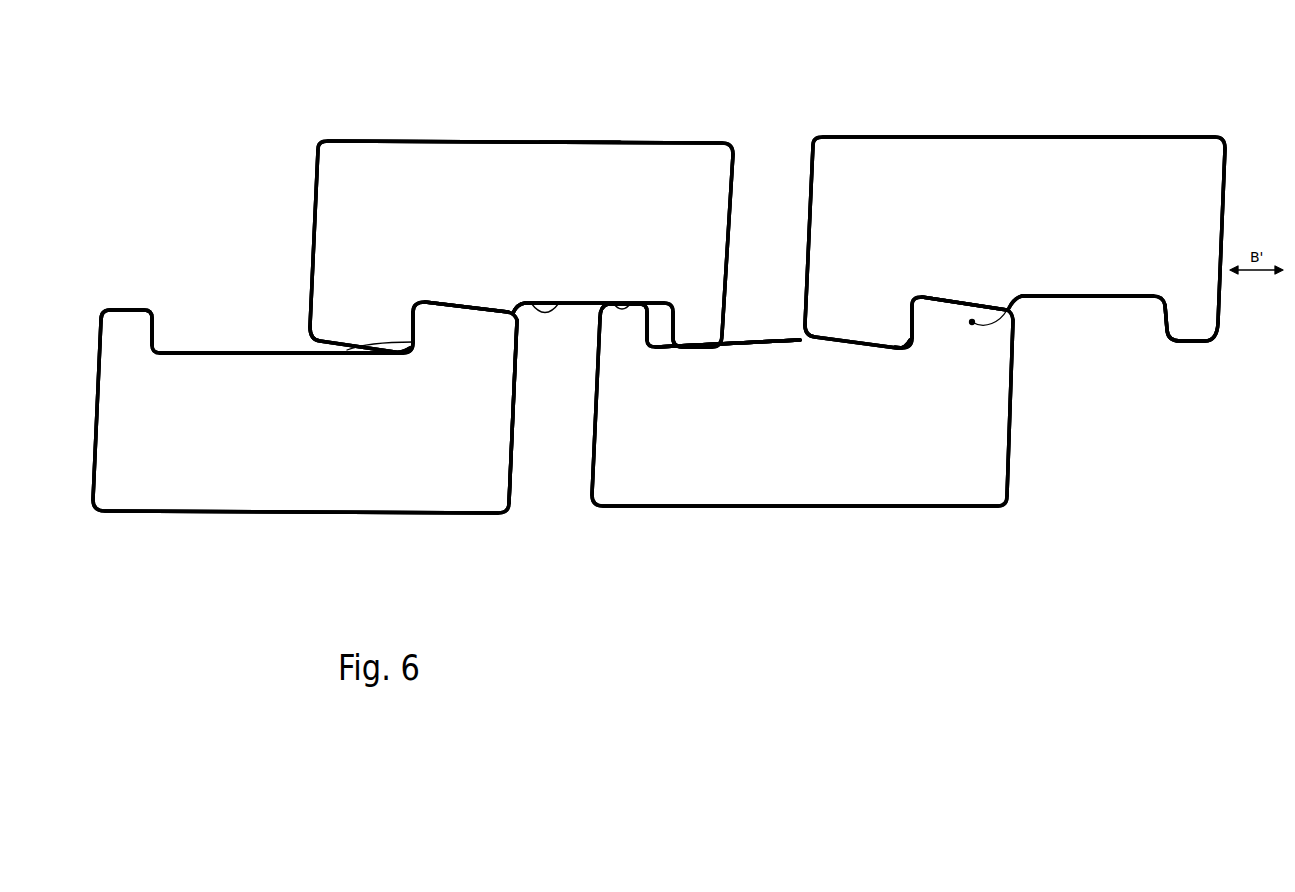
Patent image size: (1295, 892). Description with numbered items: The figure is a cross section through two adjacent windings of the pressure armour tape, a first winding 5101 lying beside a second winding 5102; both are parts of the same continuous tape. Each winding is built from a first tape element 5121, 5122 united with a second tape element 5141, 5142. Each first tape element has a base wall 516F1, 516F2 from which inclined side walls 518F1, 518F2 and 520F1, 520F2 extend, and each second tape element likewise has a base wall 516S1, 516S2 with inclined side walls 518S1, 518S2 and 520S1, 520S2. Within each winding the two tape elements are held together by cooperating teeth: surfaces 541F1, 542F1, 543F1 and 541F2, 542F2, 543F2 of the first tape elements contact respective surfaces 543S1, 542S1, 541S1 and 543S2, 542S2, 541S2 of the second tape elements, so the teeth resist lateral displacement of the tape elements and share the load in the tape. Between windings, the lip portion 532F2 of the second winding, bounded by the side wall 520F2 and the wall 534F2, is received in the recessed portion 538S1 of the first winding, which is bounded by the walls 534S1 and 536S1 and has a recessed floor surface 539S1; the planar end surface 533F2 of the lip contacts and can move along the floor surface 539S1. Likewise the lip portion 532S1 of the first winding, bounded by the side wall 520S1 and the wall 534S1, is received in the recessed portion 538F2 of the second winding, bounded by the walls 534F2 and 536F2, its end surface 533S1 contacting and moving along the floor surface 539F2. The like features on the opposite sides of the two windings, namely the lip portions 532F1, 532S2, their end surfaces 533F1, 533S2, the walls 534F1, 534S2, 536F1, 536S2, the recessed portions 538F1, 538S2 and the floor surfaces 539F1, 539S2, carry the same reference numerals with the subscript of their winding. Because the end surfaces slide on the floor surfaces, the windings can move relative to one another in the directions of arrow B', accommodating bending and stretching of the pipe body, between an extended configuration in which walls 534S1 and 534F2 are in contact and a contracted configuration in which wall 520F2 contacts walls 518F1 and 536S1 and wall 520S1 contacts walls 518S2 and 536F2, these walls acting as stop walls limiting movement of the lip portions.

The first winding 5101 is at (1098, 160).
The second winding 5102 is at (575, 150).
The first tape element 5121 is at (1017, 150).
The first tape element 5122 is at (480, 140).
The second tape element 5141 is at (855, 495).
The second tape element 5142 is at (347, 493).
The base wall 516F1 is at (918, 140).
The base wall 516F2 is at (401, 150).
The side wall 518F1 is at (812, 163).
The side wall 518F2 is at (313, 165).
The side wall 520F1 is at (1227, 212).
The side wall 520F2 is at (733, 208).
The base wall 516S1 is at (733, 507).
The base wall 516S2 is at (175, 513).
The side wall 518S1 is at (1004, 490).
The side wall 518S2 is at (510, 395).
The side wall 520S1 is at (593, 457).
The side wall 520S2 is at (93, 455).
The lip portion 532F1 is at (1198, 323).
The lip portion 532F2 is at (685, 327).
The end surface 533F1 is at (1188, 336).
The end surface 533F2 is at (707, 343).
The wall 534F1 is at (1160, 300).
The wall 534F2 is at (685, 350).
The wall 536F1 is at (1013, 303).
The wall 536F2 is at (515, 317).
The recessed portion 538F1 is at (1120, 300).
The recessed portion 538F2 is at (563, 328).
The recessed floor surface 539F1 is at (1073, 300).
The recessed floor surface 539F2 is at (531, 303).
The lip portion 532S1 is at (625, 328).
The lip portion 532S2 is at (127, 330).
The end surface 533S1 is at (617, 302).
The end surface 533S2 is at (132, 303).
The wall 534S1 is at (645, 328).
The wall 534S2 is at (157, 313).
The wall 536S1 is at (793, 347).
The wall 536S2 is at (300, 350).
The recessed portion 538S1 is at (783, 323).
The recessed portion 538S2 is at (187, 353).
The recessed floor surface 539S1 is at (737, 345).
The recessed floor surface 539S2 is at (212, 353).
The surface 541F1 is at (971, 294).
The surface 541F2 is at (512, 320).
The surface 541S1 is at (850, 356).
The surface 541S2 is at (341, 354).
The surface 542F1 is at (900, 310).
The surface 542F2 is at (417, 327).
The surface 542S1 is at (921, 322).
The surface 542S2 is at (473, 310).
The surface 543F1 is at (830, 337).
The surface 543F2 is at (345, 334).
The surface 543S1 is at (1005, 305).
The surface 543S2 is at (490, 305).